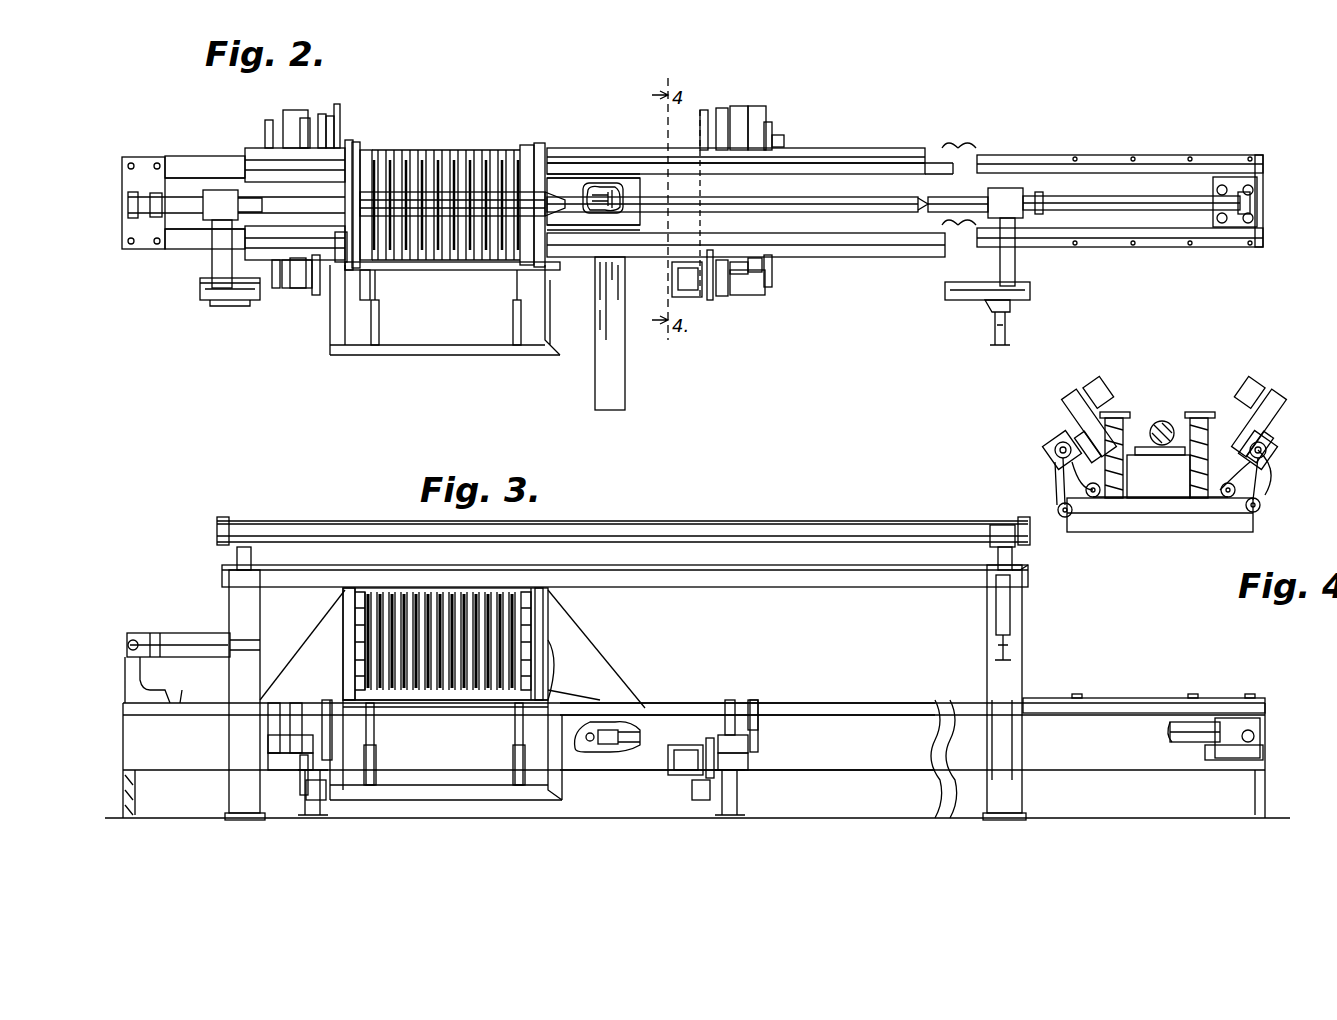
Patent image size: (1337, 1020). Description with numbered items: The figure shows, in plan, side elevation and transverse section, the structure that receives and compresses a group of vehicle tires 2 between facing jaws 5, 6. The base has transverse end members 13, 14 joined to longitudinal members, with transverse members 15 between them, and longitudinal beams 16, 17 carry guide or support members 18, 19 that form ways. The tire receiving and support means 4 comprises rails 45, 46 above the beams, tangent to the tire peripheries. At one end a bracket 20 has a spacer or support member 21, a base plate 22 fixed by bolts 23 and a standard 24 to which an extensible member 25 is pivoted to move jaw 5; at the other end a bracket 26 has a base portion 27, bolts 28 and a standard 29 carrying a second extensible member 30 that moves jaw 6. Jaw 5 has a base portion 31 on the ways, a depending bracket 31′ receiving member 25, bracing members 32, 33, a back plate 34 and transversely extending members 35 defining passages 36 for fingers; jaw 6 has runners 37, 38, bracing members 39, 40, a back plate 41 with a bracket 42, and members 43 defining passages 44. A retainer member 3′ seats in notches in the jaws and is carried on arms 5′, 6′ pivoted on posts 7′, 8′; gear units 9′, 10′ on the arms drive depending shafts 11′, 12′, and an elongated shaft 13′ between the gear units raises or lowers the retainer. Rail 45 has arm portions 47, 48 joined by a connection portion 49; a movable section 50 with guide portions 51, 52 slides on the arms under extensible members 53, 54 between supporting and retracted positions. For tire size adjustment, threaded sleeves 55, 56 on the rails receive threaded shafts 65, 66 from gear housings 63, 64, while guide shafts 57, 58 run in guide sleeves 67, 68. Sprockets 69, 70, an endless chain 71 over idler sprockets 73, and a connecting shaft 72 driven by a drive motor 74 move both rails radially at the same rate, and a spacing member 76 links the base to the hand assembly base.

In FIG. 2, the vehicle tires 2 is at (455, 152).
In FIG. 3, the vehicle tires 2 is at (482, 590).
In FIG. 2, the retainer member 3′ is at (925, 200).
In FIG. 3, the retainer member 3′ is at (890, 588).
In FIG. 2, the tire receiving and support means 4 is at (422, 152).
In FIG. 2, the jaw 5 is at (527, 145).
In FIG. 3, the jaw 5 is at (542, 588).
In FIG. 2, the arm 5′ is at (1000, 262).
In FIG. 2, the jaw 6 is at (357, 145).
In FIG. 3, the jaw 6 is at (348, 588).
In FIG. 2, the arm 6′ is at (212, 270).
In FIG. 2, the post 7′ is at (985, 305).
In FIG. 3, the post 7′ is at (1022, 658).
In FIG. 2, the post 8′ is at (225, 300).
In FIG. 3, the post 8′ is at (229, 592).
In FIG. 2, the gear unit 9′ is at (1004, 188).
In FIG. 3, the gear unit 9′ is at (1018, 517).
In FIG. 2, the gear unit 10′ is at (215, 190).
In FIG. 3, the gear unit 10′ is at (228, 517).
In FIG. 3, the shaft 11′ is at (995, 554).
In FIG. 3, the shaft 12′ is at (252, 558).
In FIG. 3, the transverse end member 13 is at (1266, 788).
In FIG. 2, the elongated shaft 13′ is at (925, 212).
In FIG. 3, the transverse end member 14 is at (123, 787).
In FIG. 2, the transverse members 15 is at (262, 150).
In FIG. 3, the transverse members 15 is at (300, 800).
In FIG. 2, the longitudinal beam 16 is at (1046, 238).
In FIG. 2, the longitudinal beam 17 is at (1055, 162).
In FIG. 2, the guide or support member 18 is at (1210, 247).
In FIG. 3, the guide or support member 18 is at (1165, 698).
In FIG. 4, the guide or support member 18 is at (1196, 418).
In FIG. 2, the guide or support member 19 is at (1148, 158).
In FIG. 4, the guide or support member 19 is at (1125, 418).
In FIG. 2, the bracket 20 is at (1262, 180).
In FIG. 2, the spacer or support member 21 is at (1205, 178).
In FIG. 2, the base plate 22 is at (1240, 180).
In FIG. 3, the base plate 22 is at (1262, 722).
In FIG. 2, the bolts 23 is at (1262, 218).
In FIG. 3, the bolts 23 is at (1265, 750).
In FIG. 2, the standard 24 is at (1250, 200).
In FIG. 3, the standard 24 is at (1262, 736).
In FIG. 2, the extensible member 25 is at (1142, 215).
In FIG. 4, the extensible member 25 is at (1166, 421).
In FIG. 2, the bracket 26 is at (170, 172).
In FIG. 3, the bracket 26 is at (172, 705).
In FIG. 3, the base portion 27 is at (128, 700).
In FIG. 2, the bolts 28 is at (128, 157).
In FIG. 3, the bolts 28 is at (125, 700).
In FIG. 3, the standard 29 is at (125, 672).
In FIG. 2, the second extensible member 30 is at (185, 232).
In FIG. 3, the second extensible member 30 is at (190, 633).
In FIG. 2, the base portion 31 is at (568, 176).
In FIG. 2, the bracket 31′ is at (600, 185).
In FIG. 3, the bracket 31′ is at (595, 725).
In FIG. 2, the bracing member 32 is at (612, 228).
In FIG. 3, the bracing member 32 is at (585, 636).
In FIG. 2, the bracing member 33 is at (578, 178).
In FIG. 2, the back plate 34 is at (572, 228).
In FIG. 3, the back plate 34 is at (550, 680).
In FIG. 2, the transversely extending members 35 is at (539, 143).
In FIG. 3, the passages 36 is at (533, 604).
In FIG. 2, the runner 37 is at (272, 262).
In FIG. 2, the runner 38 is at (280, 185).
In FIG. 2, the bracing member 39 is at (343, 262).
In FIG. 3, the bracing member 39 is at (330, 610).
In FIG. 2, the bracing member 40 is at (331, 130).
In FIG. 2, the back plate 41 is at (350, 142).
In FIG. 2, the bracket 42 is at (372, 264).
In FIG. 2, the transversely extending members 43 is at (366, 152).
In FIG. 3, the passages 44 is at (340, 590).
In FIG. 2, the rail 45 is at (886, 257).
In FIG. 4, the rail 45 is at (1228, 398).
In FIG. 2, the rail 46 is at (900, 150).
In FIG. 4, the rail 46 is at (1106, 398).
In FIG. 2, the arm portion 47 is at (332, 355).
In FIG. 3, the arm portion 47 is at (345, 730).
In FIG. 2, the arm portion 48 is at (552, 355).
In FIG. 3, the arm portion 48 is at (548, 724).
In FIG. 2, the connection portion 49 is at (456, 355).
In FIG. 3, the connection portion 49 is at (468, 800).
In FIG. 2, the movable section 50 is at (462, 260).
In FIG. 3, the movable section 50 is at (438, 705).
In FIG. 2, the guide portion 51 is at (362, 292).
In FIG. 3, the guide portion 51 is at (328, 700).
In FIG. 3, the guide portion 52 is at (575, 695).
In FIG. 2, the extensible member 53 is at (379, 322).
In FIG. 3, the extensible member 53 is at (376, 752).
In FIG. 2, the extensible member 54 is at (513, 322).
In FIG. 3, the extensible member 54 is at (513, 750).
In FIG. 2, the threaded sleeves 55 is at (722, 108).
In FIG. 3, the threaded sleeves 55 is at (728, 700).
In FIG. 4, the threaded sleeves 55 is at (1092, 398).
In FIG. 2, the threaded sleeves 56 is at (322, 114).
In FIG. 3, the threaded sleeves 56 is at (296, 703).
In FIG. 2, the guide shafts 57 is at (770, 122).
In FIG. 3, the guide shafts 57 is at (758, 740).
In FIG. 2, the guide shafts 58 is at (268, 120).
In FIG. 3, the guide shafts 58 is at (268, 730).
In FIG. 2, the gear housing 63 is at (300, 290).
In FIG. 3, the gear housing 63 is at (268, 765).
In FIG. 4, the gear housing 63 is at (1270, 440).
In FIG. 2, the gear housing 64 is at (290, 110).
In FIG. 4, the gear housing 64 is at (1048, 442).
In FIG. 2, the threaded shaft 65 is at (750, 290).
In FIG. 3, the threaded shaft 65 is at (268, 745).
In FIG. 4, the threaded shaft 65 is at (1250, 432).
In FIG. 2, the threaded shaft 66 is at (305, 118).
In FIG. 4, the threaded shaft 66 is at (1080, 430).
In FIG. 2, the guide sleeves 67 is at (762, 268).
In FIG. 3, the guide sleeves 67 is at (756, 702).
In FIG. 2, the guide sleeves 68 is at (784, 138).
In FIG. 2, the sprocket 69 is at (316, 296).
In FIG. 3, the sprocket 69 is at (316, 800).
In FIG. 2, the sprocket 70 is at (338, 104).
In FIG. 4, the sprocket 70 is at (1072, 452).
In FIG. 2, the endless chain 71 is at (705, 216).
In FIG. 4, the endless chain 71 is at (1150, 510).
In FIG. 2, the connecting shaft 72 is at (630, 157).
In FIG. 4, the idler sprockets 73 is at (1060, 518).
In FIG. 2, the drive motor 74 is at (690, 298).
In FIG. 3, the drive motor 74 is at (685, 775).
In FIG. 4, the drive motor 74 is at (1270, 468).
In FIG. 2, the spacing member 76 is at (625, 408).